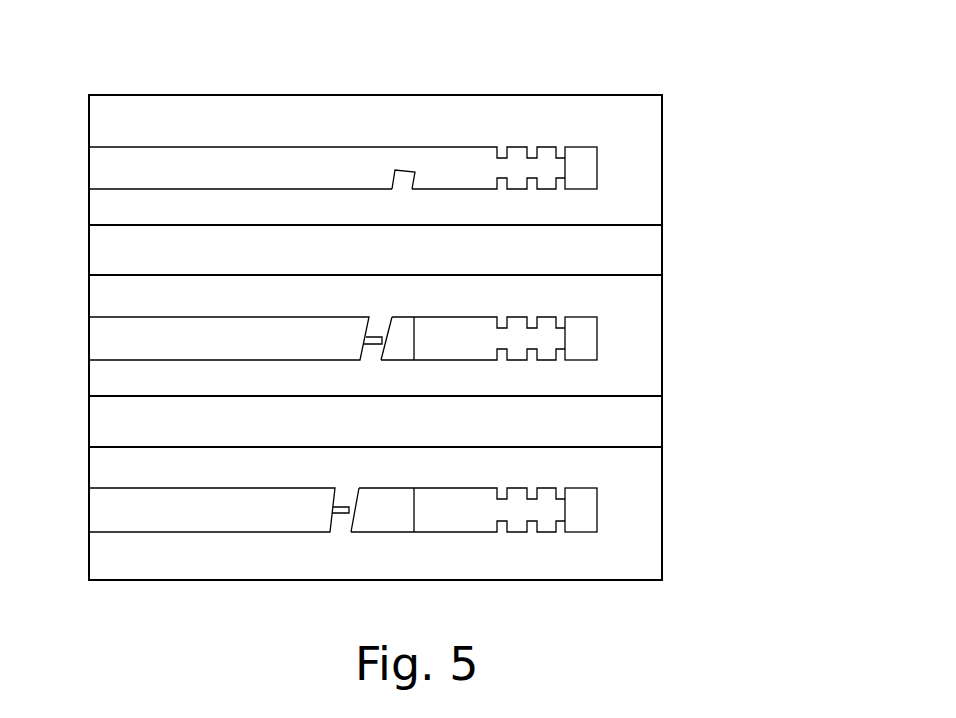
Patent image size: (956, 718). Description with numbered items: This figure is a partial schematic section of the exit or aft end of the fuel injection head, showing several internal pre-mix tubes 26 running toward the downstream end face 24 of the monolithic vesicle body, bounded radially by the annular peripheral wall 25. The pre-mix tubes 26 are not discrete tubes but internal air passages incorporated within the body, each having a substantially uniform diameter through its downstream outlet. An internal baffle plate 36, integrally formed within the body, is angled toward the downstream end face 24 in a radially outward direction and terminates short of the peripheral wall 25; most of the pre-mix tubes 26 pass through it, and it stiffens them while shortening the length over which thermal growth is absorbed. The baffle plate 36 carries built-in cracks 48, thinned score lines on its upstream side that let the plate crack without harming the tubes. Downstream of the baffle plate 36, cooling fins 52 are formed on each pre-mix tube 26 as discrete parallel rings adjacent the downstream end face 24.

The downstream end face 24 is at (662, 173).
The annular peripheral wall 25 is at (528, 95).
The pre-mix tubes 26 is at (662, 423).
The baffle plate 36 is at (390, 183).
The cracks 48 is at (346, 339).
The cooling fins 52 is at (502, 533).